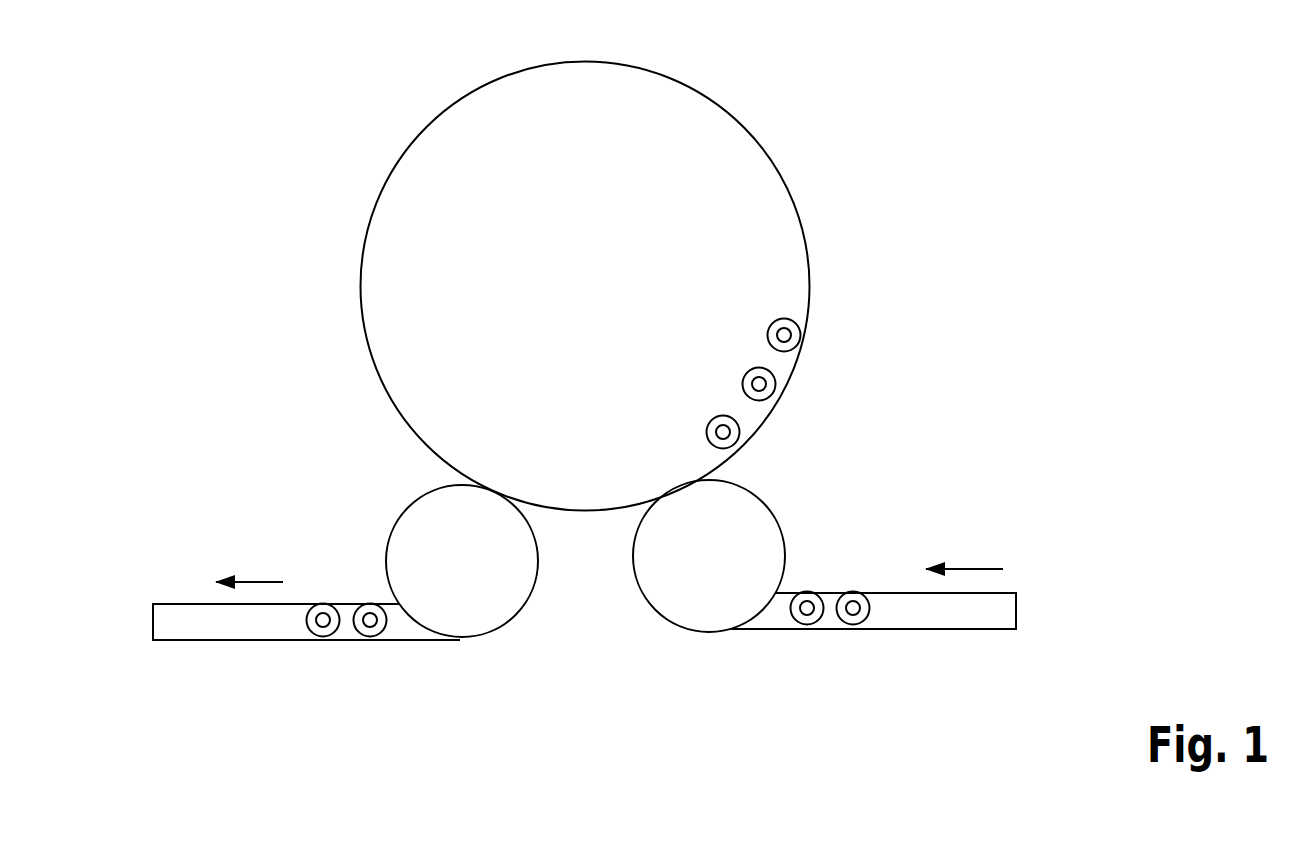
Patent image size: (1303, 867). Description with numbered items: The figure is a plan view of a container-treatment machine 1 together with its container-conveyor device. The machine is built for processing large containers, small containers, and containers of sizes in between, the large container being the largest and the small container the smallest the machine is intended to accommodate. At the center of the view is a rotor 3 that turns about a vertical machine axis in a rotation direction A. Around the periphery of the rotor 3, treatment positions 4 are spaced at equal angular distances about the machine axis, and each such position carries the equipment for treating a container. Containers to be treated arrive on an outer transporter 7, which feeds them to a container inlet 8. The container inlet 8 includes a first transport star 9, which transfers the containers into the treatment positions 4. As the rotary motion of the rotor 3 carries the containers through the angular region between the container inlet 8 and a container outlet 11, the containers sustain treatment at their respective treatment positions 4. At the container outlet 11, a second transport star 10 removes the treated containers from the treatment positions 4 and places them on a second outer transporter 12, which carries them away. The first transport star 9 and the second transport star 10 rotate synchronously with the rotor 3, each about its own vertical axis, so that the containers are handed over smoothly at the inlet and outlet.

The container-treatment machine 1 is at (926, 155).
The rotor 3 is at (720, 168).
The treatment position 4 is at (822, 378).
The outer transporter 7 is at (878, 645).
The container inlet 8 is at (668, 660).
The first transport star 9 is at (745, 533).
The second transport star 10 is at (425, 522).
The container outlet 11 is at (509, 646).
The outer transporter 12 is at (301, 658).
The rotation direction A is at (448, 50).